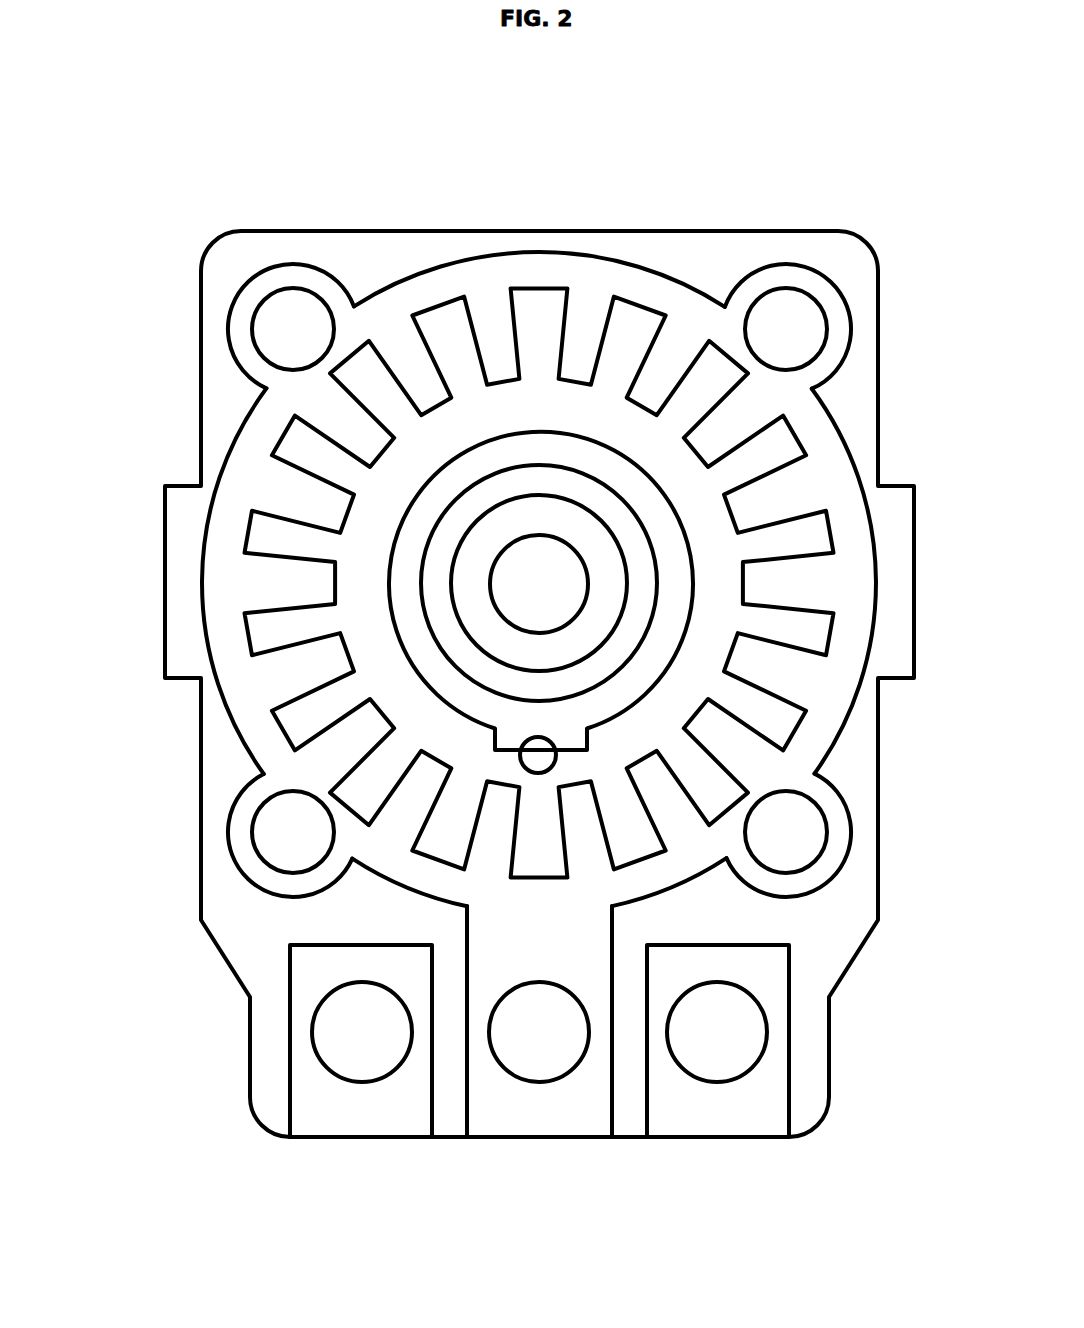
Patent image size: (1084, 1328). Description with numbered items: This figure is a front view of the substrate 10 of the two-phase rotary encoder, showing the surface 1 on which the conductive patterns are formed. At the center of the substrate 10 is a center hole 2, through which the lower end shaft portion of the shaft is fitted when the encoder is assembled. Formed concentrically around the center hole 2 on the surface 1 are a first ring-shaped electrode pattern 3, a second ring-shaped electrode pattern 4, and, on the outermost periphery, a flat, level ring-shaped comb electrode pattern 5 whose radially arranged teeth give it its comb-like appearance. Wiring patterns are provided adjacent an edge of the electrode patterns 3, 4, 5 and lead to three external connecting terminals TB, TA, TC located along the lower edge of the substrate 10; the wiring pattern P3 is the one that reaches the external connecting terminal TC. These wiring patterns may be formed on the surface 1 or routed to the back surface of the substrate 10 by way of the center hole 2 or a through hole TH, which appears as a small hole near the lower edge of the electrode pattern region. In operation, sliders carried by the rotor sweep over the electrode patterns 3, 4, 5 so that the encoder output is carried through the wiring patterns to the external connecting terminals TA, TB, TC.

The surface 1 is at (363, 281).
The center hole 2 is at (545, 577).
The first ring-shaped electrode pattern 3 is at (473, 540).
The second ring-shaped electrode pattern 4 is at (407, 540).
The ring-shaped comb electrode pattern 5 is at (228, 577).
The substrate 10 is at (843, 194).
The through hole TH is at (533, 754).
The wiring pattern P3 is at (497, 937).
The external connecting terminal TA is at (373, 1115).
The external connecting terminal TB is at (722, 1115).
The external connecting terminal TC is at (544, 1112).